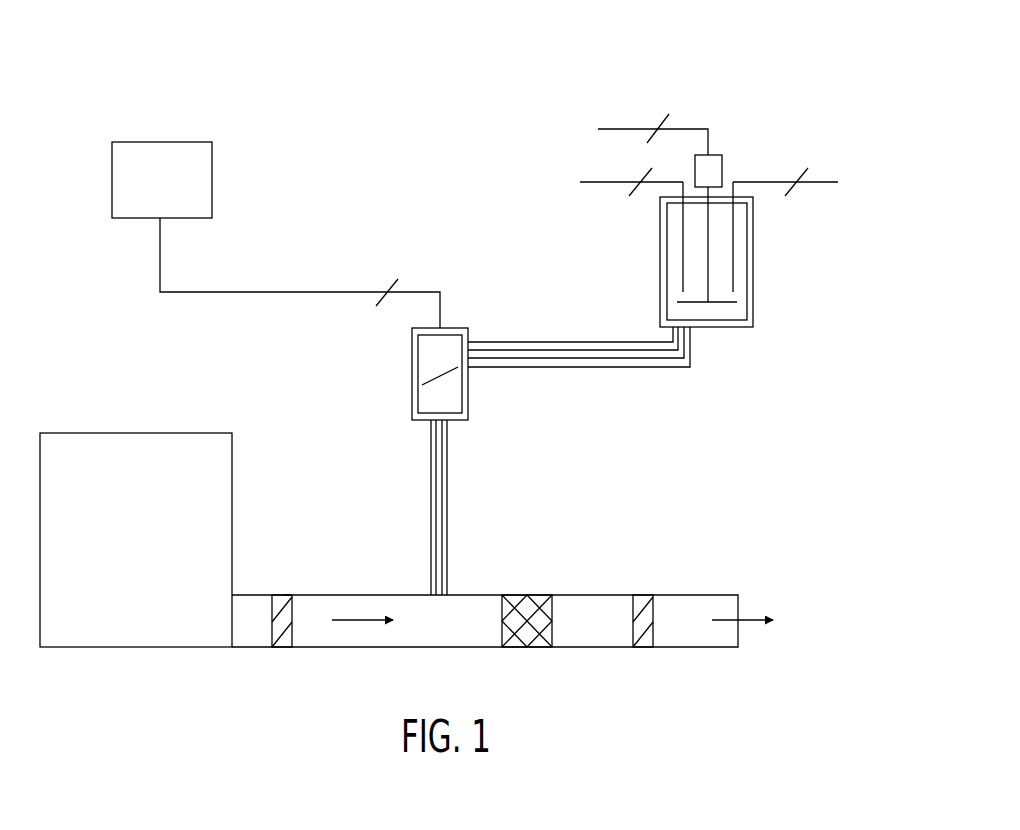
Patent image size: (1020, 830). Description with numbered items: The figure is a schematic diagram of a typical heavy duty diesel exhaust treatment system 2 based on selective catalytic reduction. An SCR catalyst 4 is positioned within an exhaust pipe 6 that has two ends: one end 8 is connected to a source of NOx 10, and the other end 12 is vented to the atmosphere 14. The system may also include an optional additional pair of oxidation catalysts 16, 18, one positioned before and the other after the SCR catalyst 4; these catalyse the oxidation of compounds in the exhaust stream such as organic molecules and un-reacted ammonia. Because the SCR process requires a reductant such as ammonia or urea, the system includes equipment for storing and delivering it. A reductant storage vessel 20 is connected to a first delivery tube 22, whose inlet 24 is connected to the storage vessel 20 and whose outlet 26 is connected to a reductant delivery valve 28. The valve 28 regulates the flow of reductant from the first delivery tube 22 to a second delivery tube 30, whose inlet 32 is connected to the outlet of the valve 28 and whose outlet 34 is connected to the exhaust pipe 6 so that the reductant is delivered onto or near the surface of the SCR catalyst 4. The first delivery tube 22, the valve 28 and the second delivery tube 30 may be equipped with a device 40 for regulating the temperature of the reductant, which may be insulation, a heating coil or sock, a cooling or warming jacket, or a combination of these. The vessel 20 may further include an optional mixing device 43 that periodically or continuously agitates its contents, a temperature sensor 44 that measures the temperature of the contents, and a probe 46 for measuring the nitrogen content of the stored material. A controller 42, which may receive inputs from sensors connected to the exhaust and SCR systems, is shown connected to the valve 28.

The diesel exhaust treatment system 2 is at (468, 68).
The SCR catalyst 4 is at (525, 605).
The exhaust pipe 6 is at (340, 640).
The one end of exhaust pipe 8 is at (248, 607).
The source of NOx 10 is at (120, 433).
The other end of exhaust pipe 12 is at (743, 605).
The atmosphere 14 is at (742, 625).
The oxidation catalyst 16 is at (282, 607).
The oxidation catalyst 18 is at (645, 607).
The reductant storage vessel 20 is at (757, 242).
The first delivery tube 22 is at (692, 358).
The inlet of first delivery tube 24 is at (692, 332).
The outlet of first delivery tube 26 is at (473, 333).
The reductant delivery valve 28 is at (452, 340).
The second delivery tube 30 is at (451, 461).
The inlet of second delivery tube 32 is at (451, 431).
The outlet of second delivery tube 34 is at (452, 592).
The temperature regulating device 40 is at (550, 368).
The controller 42 is at (157, 142).
The mixing device 43 is at (712, 262).
The temperature sensor 44 is at (770, 182).
The probe 46 is at (596, 185).